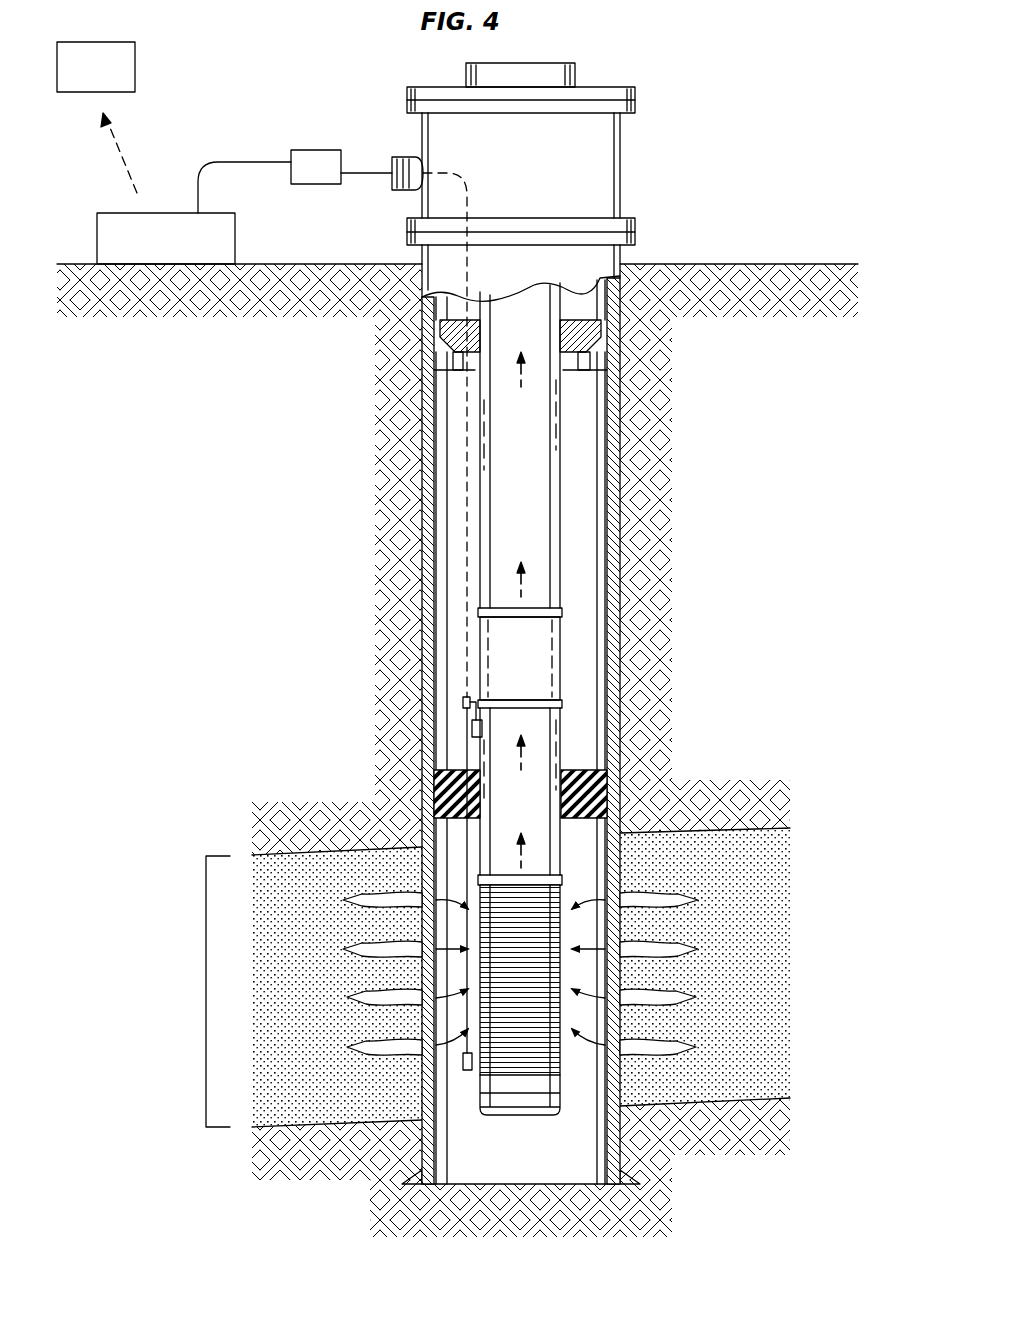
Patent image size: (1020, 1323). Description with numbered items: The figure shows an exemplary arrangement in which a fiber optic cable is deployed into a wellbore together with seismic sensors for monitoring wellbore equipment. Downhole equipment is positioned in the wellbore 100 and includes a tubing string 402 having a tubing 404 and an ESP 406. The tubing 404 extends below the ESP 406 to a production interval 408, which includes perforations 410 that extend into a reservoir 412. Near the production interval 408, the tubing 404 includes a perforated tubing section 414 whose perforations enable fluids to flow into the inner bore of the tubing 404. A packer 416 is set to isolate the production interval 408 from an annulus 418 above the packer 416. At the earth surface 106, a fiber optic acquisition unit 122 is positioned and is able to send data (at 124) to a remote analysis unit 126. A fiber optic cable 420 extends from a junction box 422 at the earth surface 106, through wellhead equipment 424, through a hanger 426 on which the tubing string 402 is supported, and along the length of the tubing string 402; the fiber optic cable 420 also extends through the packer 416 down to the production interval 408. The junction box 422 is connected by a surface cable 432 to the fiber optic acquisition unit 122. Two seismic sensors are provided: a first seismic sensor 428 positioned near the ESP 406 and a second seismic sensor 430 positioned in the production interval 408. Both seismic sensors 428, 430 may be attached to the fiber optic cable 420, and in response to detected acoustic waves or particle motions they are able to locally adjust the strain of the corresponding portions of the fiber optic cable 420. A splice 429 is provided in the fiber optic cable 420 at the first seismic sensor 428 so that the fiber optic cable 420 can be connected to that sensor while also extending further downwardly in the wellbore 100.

The wellbore 100 is at (586, 645).
The earth surface 106 is at (752, 264).
The fiber optic acquisition unit 122 is at (144, 253).
The data transmission 124 is at (122, 157).
The remote analysis unit 126 is at (75, 80).
The tubing string 402 is at (580, 445).
The tubing 404 is at (562, 513).
The ESP 406 is at (500, 675).
The production interval 408 is at (206, 992).
The perforations 410 is at (700, 914).
The reservoir 412 is at (730, 1080).
The perforated tubing section 414 is at (500, 1001).
The packer 416 is at (605, 785).
The annulus 418 is at (447, 505).
The fiber optic cable 420 is at (467, 555).
The junction box 422 is at (315, 150).
The wellhead equipment 424 is at (500, 185).
The hanger 426 is at (600, 340).
The first seismic sensor 428 is at (472, 730).
The splice 429 is at (463, 700).
The second seismic sensor 430 is at (463, 1062).
The surface cable 432 is at (258, 162).